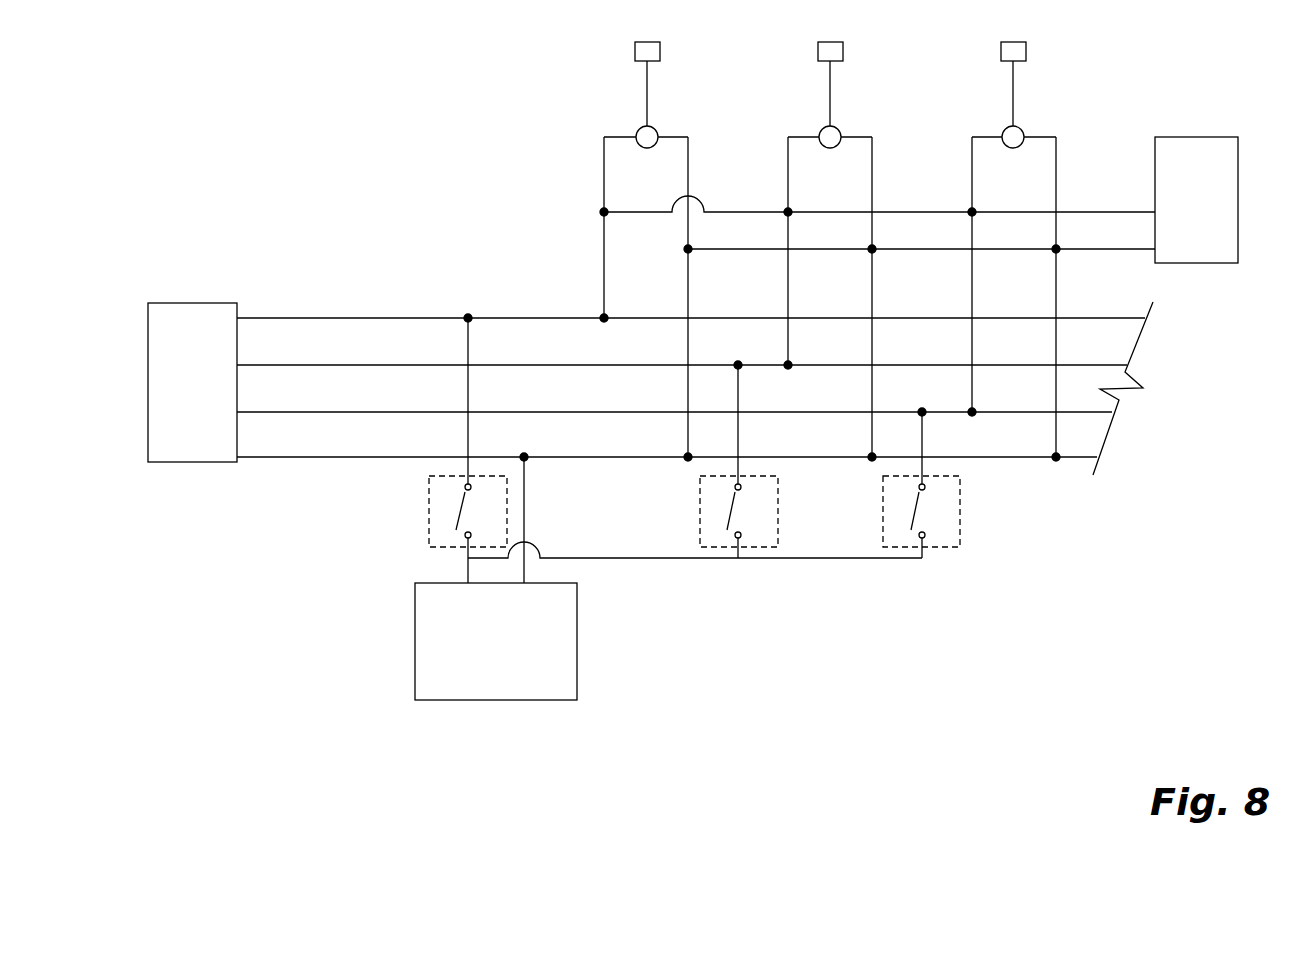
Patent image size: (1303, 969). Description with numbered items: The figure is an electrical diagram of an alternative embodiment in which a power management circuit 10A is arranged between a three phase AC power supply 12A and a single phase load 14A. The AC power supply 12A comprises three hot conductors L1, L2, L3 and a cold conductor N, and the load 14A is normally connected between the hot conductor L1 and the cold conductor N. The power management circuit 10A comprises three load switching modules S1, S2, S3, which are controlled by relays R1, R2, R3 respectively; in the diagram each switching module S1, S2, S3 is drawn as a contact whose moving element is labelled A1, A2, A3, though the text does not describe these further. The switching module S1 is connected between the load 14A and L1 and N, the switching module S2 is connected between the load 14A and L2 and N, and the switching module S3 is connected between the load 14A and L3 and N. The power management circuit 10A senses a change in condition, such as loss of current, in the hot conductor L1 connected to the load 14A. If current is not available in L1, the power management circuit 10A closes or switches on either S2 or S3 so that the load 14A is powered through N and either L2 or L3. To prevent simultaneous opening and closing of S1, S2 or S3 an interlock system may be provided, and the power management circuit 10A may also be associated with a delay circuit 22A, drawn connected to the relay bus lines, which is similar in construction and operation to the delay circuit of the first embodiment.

The power management circuit 10A is at (342, 702).
The three phase AC power supply 12A is at (192, 382).
The single phase load 14A is at (496, 641).
The delay circuit 22A is at (1196, 200).
The relay R1 is at (658, 128).
The relay R2 is at (841, 128).
The relay R3 is at (1024, 128).
The load switching module S1 is at (373, 546).
The load switching module S2 is at (645, 541).
The load switching module S3 is at (830, 541).
The actuator 1 A1 is at (460, 508).
The actuator 2 A2 is at (730, 510).
The actuator 3 A3 is at (913, 510).
The hot conductor L1 is at (691, 308).
The hot conductor L2 is at (682, 355).
The hot conductor L3 is at (674, 402).
The cold conductor N is at (667, 447).